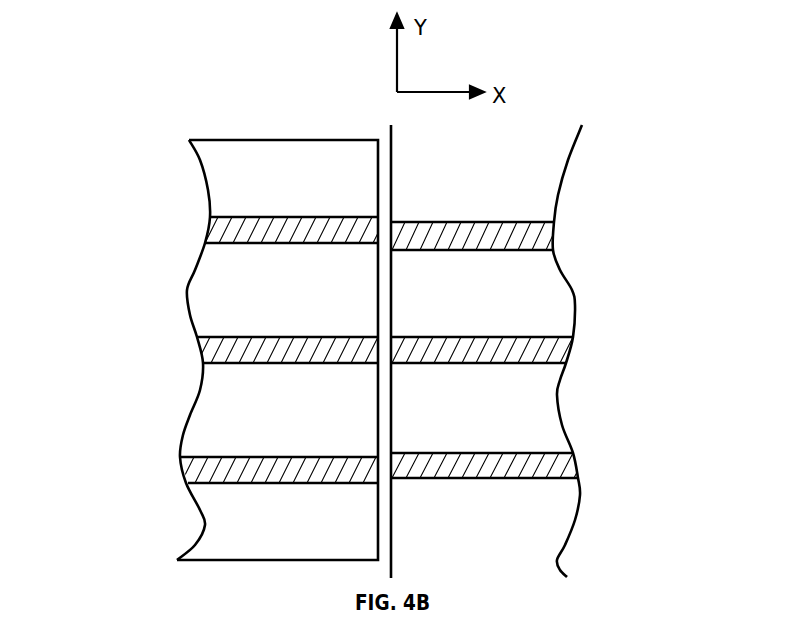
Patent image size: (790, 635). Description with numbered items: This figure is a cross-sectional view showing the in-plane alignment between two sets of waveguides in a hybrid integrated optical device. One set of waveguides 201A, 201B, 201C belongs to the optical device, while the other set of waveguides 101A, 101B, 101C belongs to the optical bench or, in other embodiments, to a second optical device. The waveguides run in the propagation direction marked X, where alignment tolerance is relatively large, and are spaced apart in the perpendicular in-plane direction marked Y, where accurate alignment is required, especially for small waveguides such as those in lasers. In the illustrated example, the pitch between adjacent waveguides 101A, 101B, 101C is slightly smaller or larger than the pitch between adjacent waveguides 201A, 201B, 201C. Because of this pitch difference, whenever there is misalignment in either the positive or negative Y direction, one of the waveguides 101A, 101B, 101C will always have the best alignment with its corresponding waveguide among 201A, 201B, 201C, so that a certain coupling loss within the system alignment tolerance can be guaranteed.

The waveguide 101A is at (527, 237).
The waveguide 101B is at (480, 350).
The waveguide 101C is at (458, 455).
The waveguide 201A is at (232, 233).
The waveguide 201B is at (257, 350).
The waveguide 201C is at (277, 457).